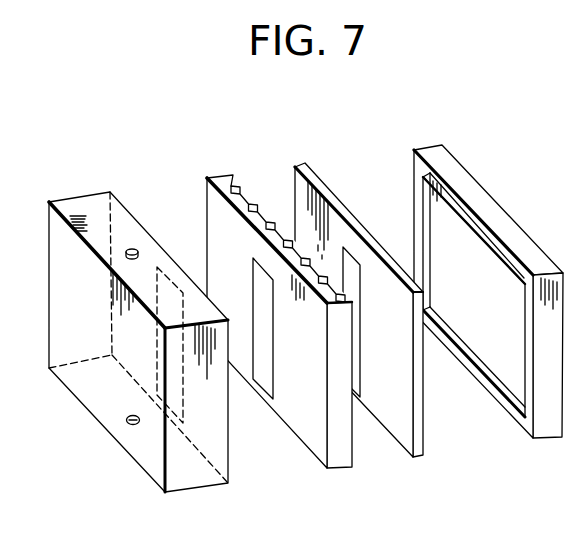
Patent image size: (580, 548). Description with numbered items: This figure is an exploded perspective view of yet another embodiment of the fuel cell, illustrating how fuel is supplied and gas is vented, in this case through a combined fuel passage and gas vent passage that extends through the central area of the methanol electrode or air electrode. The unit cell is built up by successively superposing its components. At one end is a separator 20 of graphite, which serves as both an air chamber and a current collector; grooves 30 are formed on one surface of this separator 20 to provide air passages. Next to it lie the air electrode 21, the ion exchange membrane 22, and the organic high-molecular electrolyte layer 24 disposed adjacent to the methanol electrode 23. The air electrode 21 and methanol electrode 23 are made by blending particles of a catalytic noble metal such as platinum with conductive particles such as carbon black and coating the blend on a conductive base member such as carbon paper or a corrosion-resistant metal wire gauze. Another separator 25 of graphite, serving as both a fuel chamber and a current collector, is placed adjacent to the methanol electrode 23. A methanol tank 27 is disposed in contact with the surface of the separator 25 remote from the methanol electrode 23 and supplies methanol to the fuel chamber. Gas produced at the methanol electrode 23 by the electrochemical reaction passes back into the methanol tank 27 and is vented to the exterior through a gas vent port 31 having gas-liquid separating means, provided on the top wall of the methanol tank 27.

The separator 20 is at (257, 295).
The air electrode 21 is at (369, 277).
The ion exchange membrane 22 is at (369, 277).
The methanol electrode 23 is at (337, 124).
The organic high-molecular electrolyte layer 24 is at (369, 277).
The separator 25 is at (497, 203).
The methanol tank 27 is at (138, 315).
The grooves 30 is at (247, 190).
The gas vent port 31 is at (137, 252).